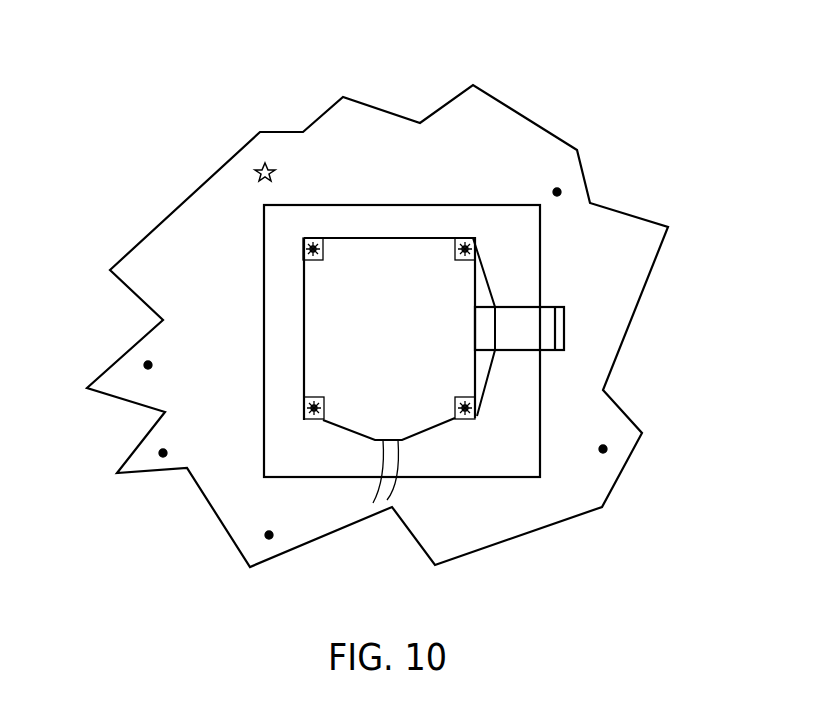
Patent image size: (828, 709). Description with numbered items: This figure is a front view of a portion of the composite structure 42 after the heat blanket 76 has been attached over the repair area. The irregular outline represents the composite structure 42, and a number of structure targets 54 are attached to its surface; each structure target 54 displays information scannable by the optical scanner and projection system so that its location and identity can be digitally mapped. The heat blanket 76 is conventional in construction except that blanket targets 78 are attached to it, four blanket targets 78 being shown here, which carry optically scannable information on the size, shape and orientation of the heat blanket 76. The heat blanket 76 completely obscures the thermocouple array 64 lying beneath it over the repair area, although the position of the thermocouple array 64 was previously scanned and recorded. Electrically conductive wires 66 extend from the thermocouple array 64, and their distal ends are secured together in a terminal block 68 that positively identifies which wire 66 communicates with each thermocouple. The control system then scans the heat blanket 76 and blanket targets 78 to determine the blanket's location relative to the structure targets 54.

The composite structure 42 is at (492, 128).
The structure targets 54 is at (262, 166).
The thermocouple array 64 is at (483, 390).
The electrically conductive wires 66 is at (518, 352).
The terminal block 68 is at (564, 323).
The heat blanket 76 is at (305, 377).
The blanket targets 78 is at (305, 245).